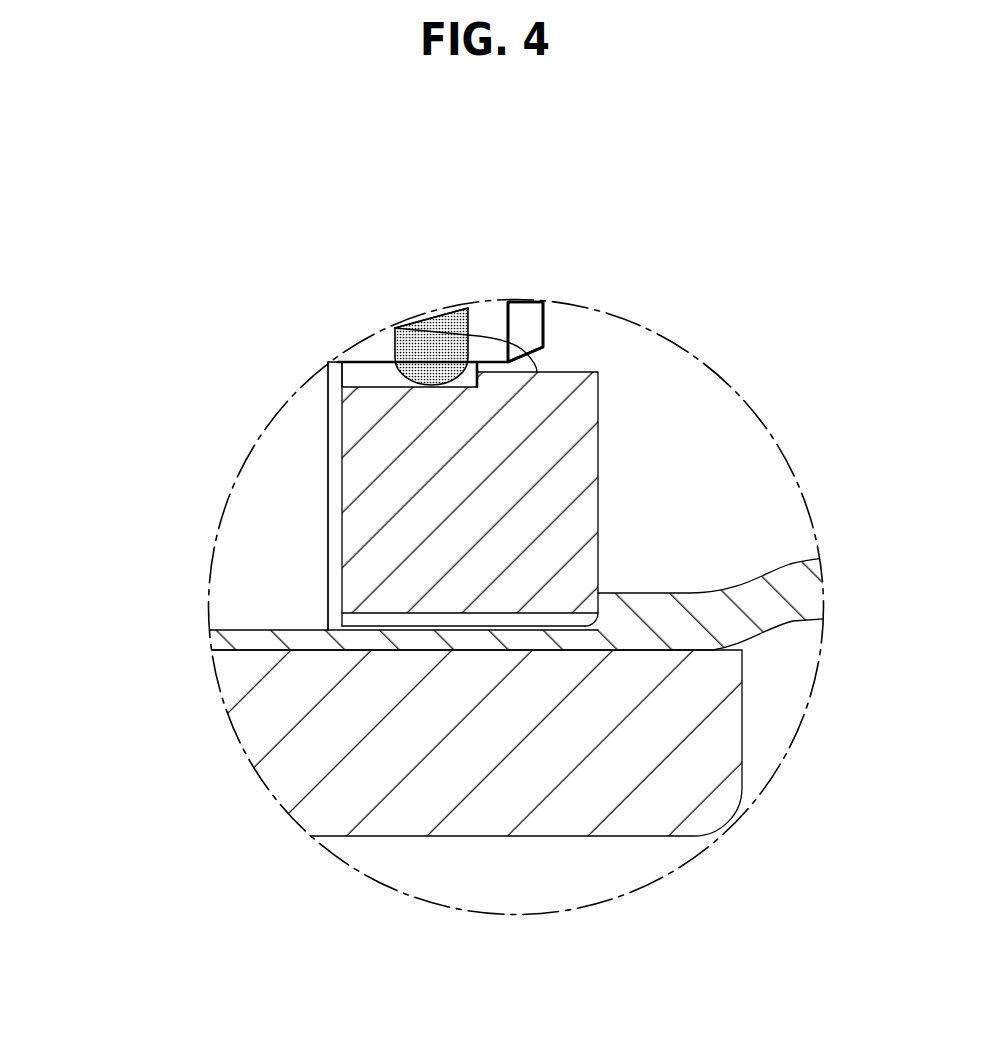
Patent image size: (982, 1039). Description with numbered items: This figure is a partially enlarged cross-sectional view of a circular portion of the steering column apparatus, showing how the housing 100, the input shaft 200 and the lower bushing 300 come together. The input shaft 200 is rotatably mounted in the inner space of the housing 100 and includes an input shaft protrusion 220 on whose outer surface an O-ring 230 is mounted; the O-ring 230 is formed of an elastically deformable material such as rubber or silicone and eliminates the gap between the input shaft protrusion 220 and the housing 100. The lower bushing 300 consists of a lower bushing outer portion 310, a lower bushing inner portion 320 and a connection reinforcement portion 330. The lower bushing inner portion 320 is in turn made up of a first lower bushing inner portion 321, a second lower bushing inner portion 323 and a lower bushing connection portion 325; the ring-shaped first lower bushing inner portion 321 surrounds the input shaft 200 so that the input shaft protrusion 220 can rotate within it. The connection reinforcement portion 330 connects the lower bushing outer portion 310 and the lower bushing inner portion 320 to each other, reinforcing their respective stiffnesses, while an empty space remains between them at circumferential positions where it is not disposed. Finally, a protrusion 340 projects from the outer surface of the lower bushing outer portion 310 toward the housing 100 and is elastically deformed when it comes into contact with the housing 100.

The housing 100 is at (780, 605).
The input shaft 200 is at (536, 190).
The input shaft protrusion 220 is at (524, 318).
The O-ring 230 is at (461, 312).
The lower bushing 300 is at (138, 394).
The lower bushing outer portion 310 is at (385, 580).
The lower bushing inner portion 320 is at (215, 183).
The first lower bushing inner portion 321 is at (377, 385).
The second lower bushing inner portion 323 is at (468, 356).
The lower bushing connection portion 325 is at (395, 327).
The connection reinforcement portion 330 is at (562, 480).
The protrusion 340 is at (357, 622).